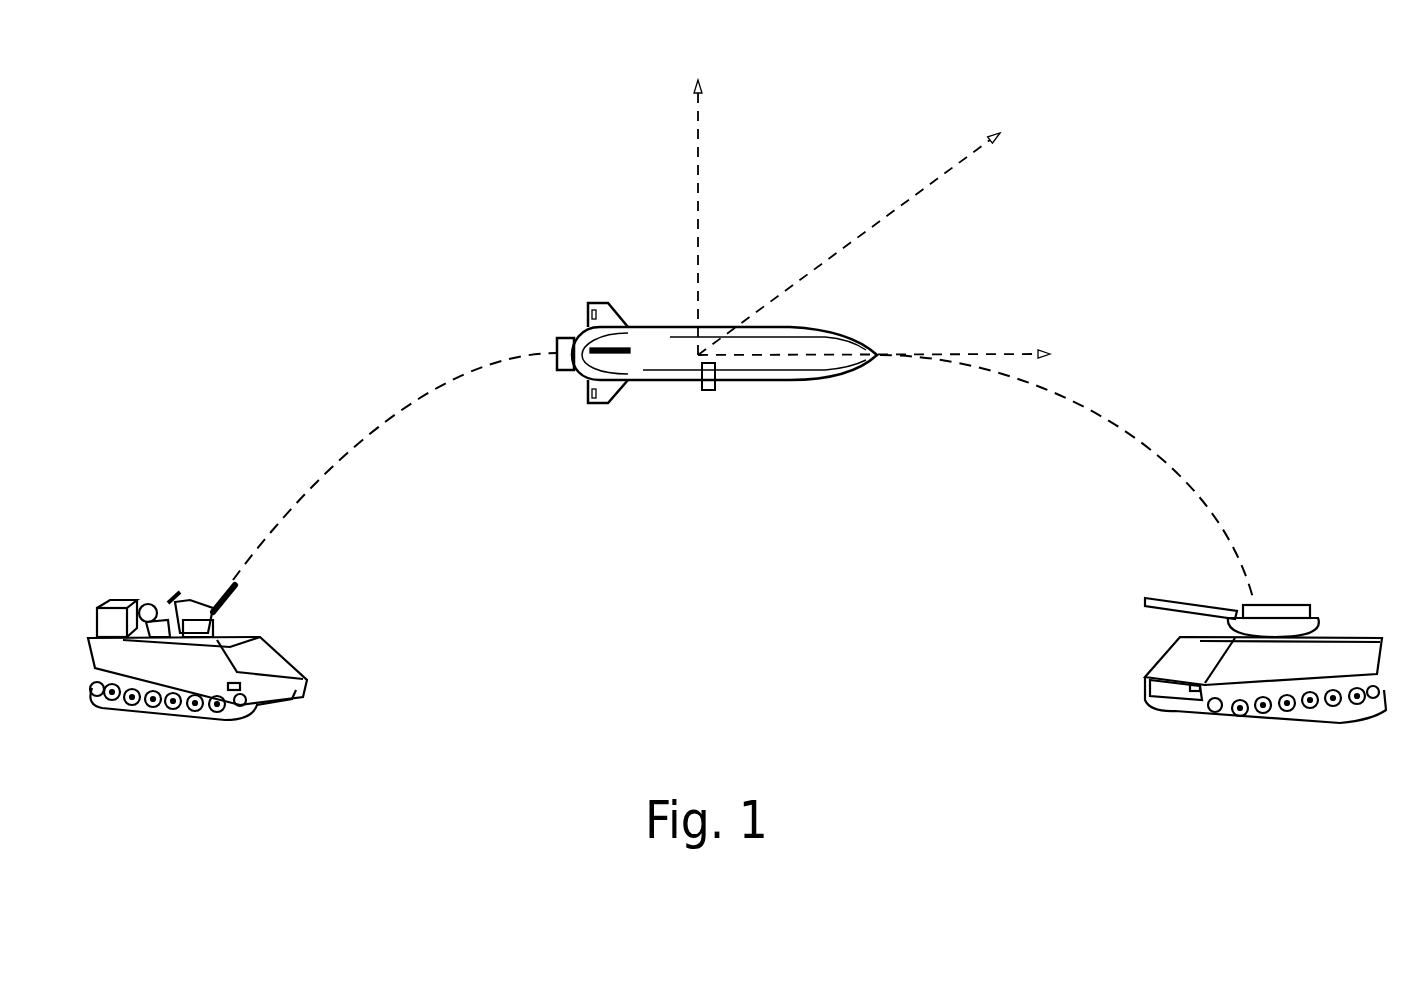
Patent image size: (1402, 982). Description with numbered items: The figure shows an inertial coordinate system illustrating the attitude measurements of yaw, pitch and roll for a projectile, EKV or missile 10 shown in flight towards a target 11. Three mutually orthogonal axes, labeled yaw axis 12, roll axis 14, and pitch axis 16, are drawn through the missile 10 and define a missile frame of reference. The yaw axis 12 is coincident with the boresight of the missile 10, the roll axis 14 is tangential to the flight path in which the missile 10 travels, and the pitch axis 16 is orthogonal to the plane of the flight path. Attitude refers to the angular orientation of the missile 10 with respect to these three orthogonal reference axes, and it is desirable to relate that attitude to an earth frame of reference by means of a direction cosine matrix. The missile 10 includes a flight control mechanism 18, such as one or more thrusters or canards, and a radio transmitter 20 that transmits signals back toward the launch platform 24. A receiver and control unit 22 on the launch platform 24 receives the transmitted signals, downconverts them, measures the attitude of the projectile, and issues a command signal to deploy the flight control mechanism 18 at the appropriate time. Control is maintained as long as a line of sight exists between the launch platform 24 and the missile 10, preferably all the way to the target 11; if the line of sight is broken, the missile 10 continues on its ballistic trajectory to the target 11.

The missile 10 is at (798, 382).
The target 11 is at (1348, 633).
The yaw axis 12 is at (698, 182).
The roll axis 14 is at (955, 353).
The pitch axis 16 is at (898, 206).
The flight control mechanism 18 is at (702, 390).
The radio transmitter 20 is at (580, 334).
The receiver and control unit 22 is at (106, 603).
The launch platform 24 is at (278, 649).